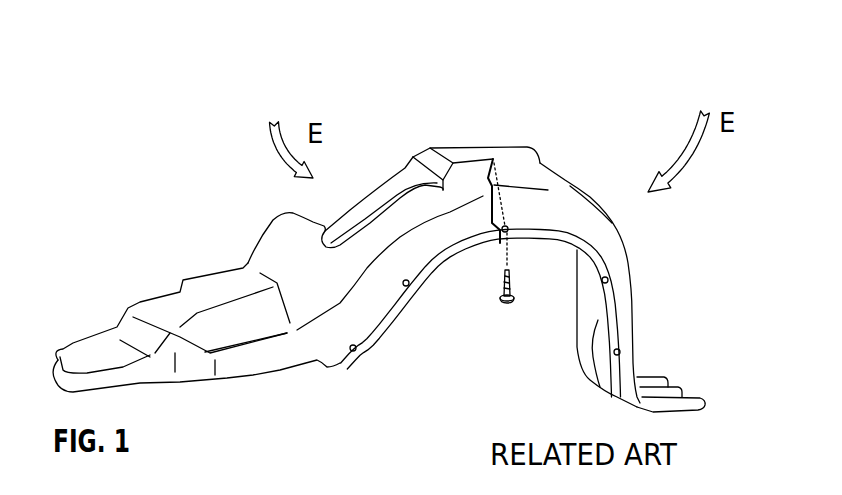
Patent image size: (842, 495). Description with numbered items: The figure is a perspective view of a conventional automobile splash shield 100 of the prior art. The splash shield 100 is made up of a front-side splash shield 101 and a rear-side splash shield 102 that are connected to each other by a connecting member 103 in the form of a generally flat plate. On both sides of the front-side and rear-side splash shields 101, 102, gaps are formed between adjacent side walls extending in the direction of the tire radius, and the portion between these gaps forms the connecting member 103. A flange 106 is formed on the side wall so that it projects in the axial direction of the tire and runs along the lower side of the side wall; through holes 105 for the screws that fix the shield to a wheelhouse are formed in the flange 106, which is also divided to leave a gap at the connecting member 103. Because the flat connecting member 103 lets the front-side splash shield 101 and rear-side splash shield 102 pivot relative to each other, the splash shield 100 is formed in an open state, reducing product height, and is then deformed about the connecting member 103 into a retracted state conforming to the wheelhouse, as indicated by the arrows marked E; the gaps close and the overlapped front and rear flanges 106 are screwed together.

The splash shield 100 is at (237, 183).
The front-side splash shield 101 is at (243, 362).
The rear-side splash shield 102 is at (600, 240).
The connecting member 103 is at (480, 152).
The through holes 105 is at (409, 288).
The flange 106 is at (453, 250).